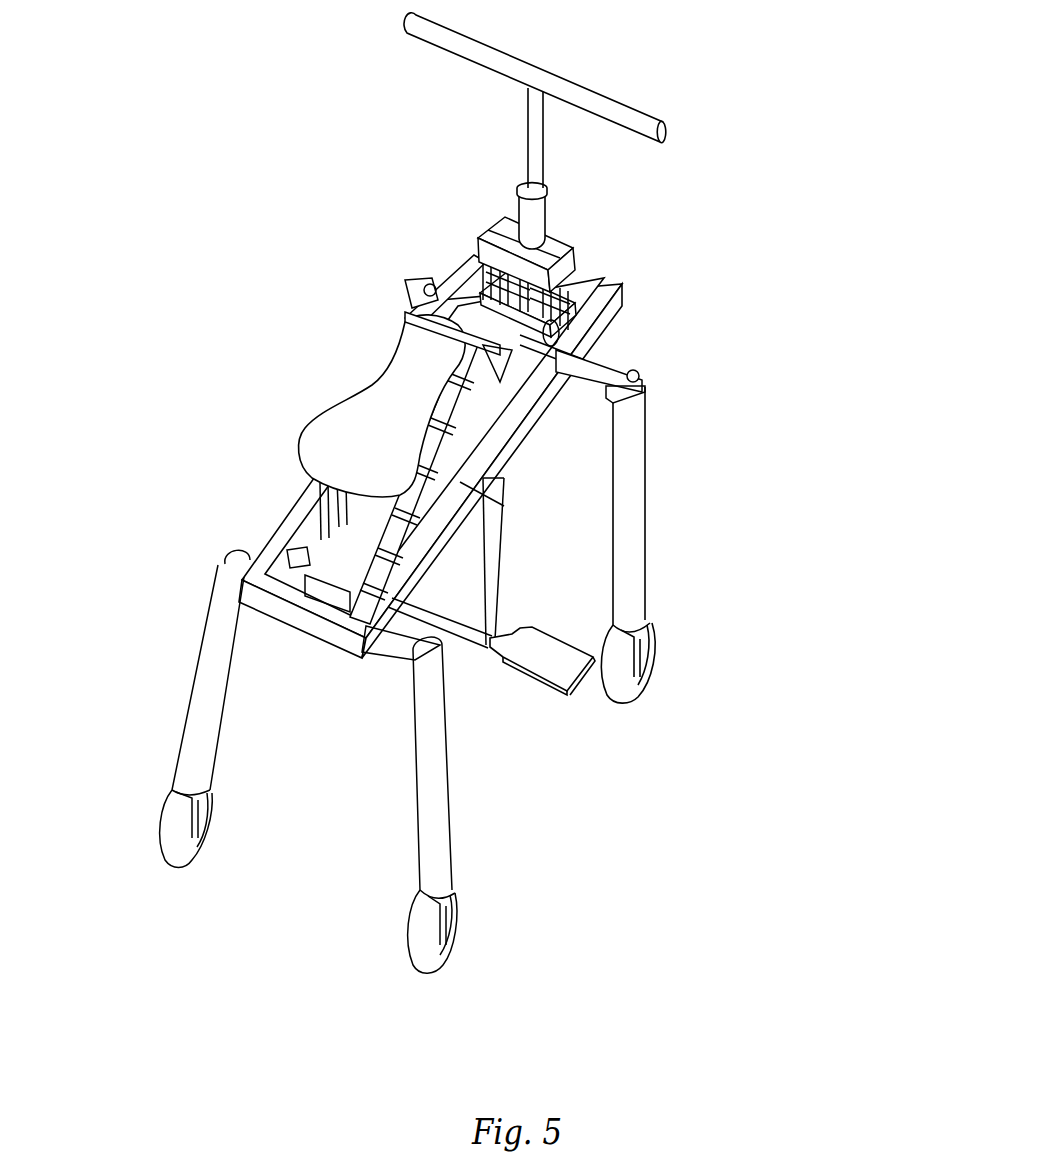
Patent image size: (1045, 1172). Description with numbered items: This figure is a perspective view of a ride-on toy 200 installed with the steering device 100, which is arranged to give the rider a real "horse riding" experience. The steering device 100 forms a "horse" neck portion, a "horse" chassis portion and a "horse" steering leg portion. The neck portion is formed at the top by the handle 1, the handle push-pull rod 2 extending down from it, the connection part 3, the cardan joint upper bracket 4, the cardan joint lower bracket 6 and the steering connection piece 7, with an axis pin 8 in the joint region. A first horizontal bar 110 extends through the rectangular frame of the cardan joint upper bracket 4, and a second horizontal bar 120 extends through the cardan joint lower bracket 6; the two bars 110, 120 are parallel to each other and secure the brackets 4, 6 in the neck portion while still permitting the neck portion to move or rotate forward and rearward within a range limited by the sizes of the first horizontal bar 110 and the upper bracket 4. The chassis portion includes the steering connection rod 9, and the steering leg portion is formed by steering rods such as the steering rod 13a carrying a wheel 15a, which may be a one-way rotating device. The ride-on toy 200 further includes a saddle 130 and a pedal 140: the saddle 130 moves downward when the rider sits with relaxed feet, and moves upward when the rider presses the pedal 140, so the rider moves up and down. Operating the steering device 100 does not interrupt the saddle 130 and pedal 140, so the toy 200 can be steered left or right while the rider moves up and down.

The handle 1 is at (646, 128).
The handle push-pull rod 2 is at (538, 147).
The connection part 3 is at (532, 213).
The cardan joint upper bracket 4 is at (623, 296).
The cardan joint lower bracket 6 is at (575, 332).
The steering connection piece 7 is at (585, 372).
The axis pin 8 is at (490, 324).
The steering connection rod 9 is at (598, 390).
The steering rod 13a is at (623, 478).
The wheel 15a is at (612, 683).
The steering device 100 is at (702, 445).
The first horizontal bar 110 is at (477, 245).
The second horizontal bar 120 is at (490, 293).
The saddle 130 is at (373, 412).
The pedal 140 is at (552, 653).
The ride-on toy 200 is at (175, 725).